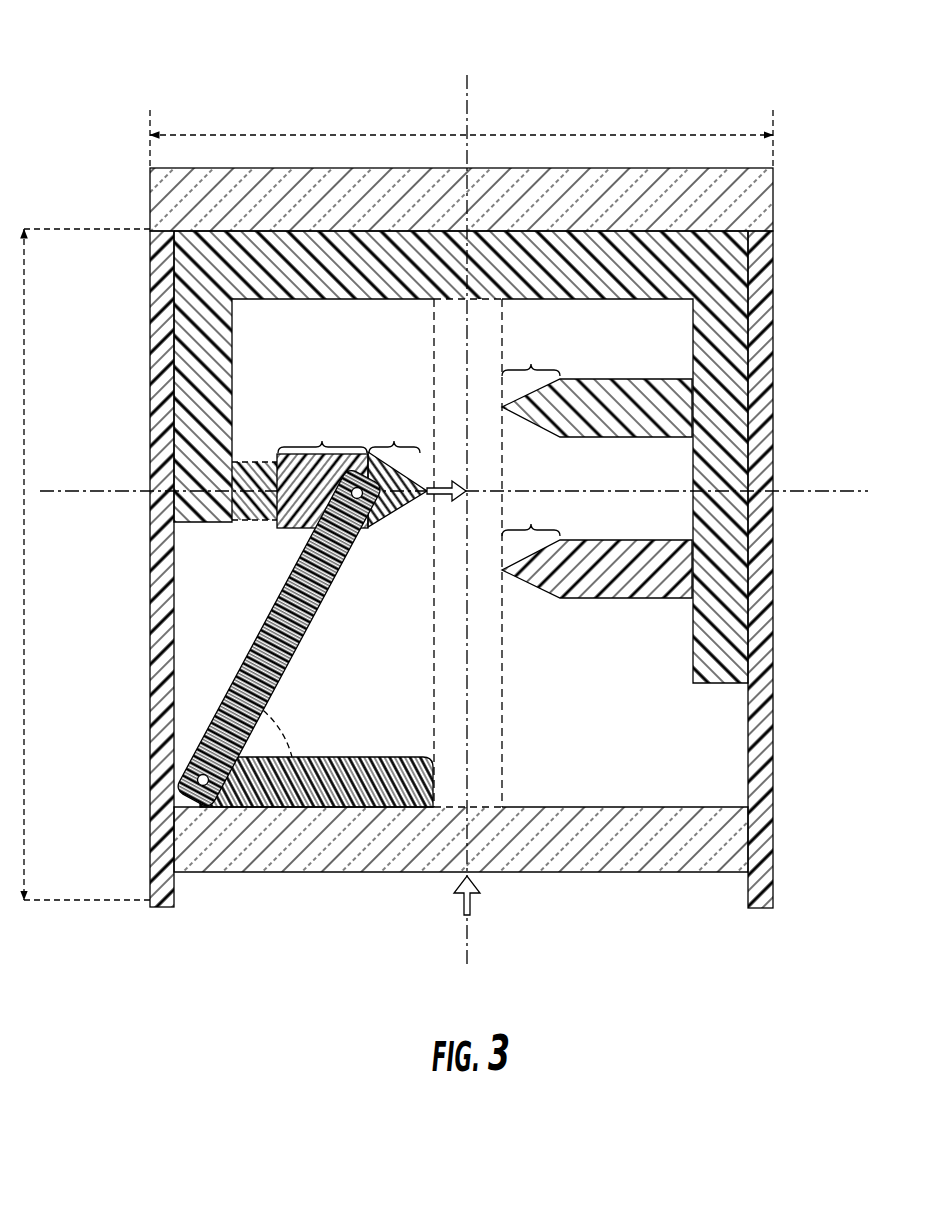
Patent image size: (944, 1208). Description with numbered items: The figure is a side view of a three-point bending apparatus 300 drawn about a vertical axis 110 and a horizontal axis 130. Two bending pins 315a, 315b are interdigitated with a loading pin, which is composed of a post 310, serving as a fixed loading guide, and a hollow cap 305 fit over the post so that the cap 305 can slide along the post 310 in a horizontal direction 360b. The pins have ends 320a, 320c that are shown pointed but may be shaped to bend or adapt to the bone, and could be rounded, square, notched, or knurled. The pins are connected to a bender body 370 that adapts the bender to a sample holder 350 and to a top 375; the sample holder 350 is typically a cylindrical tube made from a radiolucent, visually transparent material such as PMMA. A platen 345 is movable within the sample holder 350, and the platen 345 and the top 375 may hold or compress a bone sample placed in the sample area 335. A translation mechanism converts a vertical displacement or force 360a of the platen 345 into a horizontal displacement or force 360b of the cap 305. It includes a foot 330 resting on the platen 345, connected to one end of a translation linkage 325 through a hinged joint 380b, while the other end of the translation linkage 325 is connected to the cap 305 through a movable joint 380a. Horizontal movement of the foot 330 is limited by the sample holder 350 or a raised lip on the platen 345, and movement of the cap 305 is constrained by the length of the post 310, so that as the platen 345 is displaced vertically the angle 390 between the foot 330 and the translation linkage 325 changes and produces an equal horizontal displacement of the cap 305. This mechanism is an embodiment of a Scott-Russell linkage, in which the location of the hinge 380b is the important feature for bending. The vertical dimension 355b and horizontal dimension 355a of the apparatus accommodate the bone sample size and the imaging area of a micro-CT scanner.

The three-point bending apparatus 300 is at (137, 57).
The central longitudinal axis 110 is at (462, 113).
The transverse axis 130 is at (850, 487).
The hollow cap 305 is at (322, 466).
The post 310 is at (270, 460).
The bending pin 315a is at (678, 396).
The bending pin 315b is at (678, 557).
The pin end 320a is at (533, 513).
The pin end 320c is at (397, 466).
The translation linkage 325 is at (304, 606).
The foot 330 is at (410, 754).
The sample area 335 is at (505, 672).
The platen 345 is at (640, 803).
The sample holder 350 is at (147, 318).
The horizontal dimension 355a is at (290, 129).
The vertical dimension 355b is at (29, 425).
The vertical displacement/force 360a is at (479, 895).
The horizontal displacement/force 360b is at (473, 483).
The bender body 370 is at (723, 266).
The top 375 is at (778, 200).
The movable joint 380a is at (373, 522).
The hinged joint 380b is at (196, 779).
The angle 390 is at (295, 726).